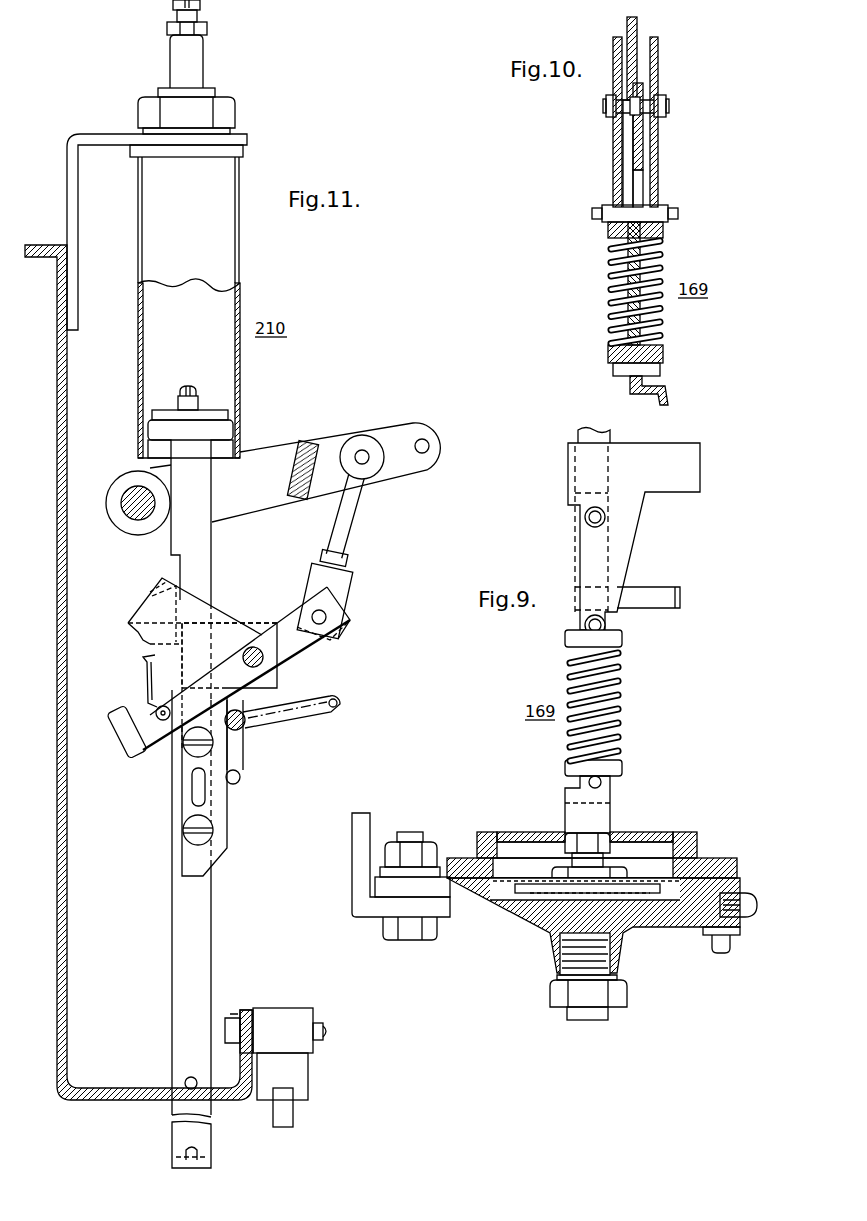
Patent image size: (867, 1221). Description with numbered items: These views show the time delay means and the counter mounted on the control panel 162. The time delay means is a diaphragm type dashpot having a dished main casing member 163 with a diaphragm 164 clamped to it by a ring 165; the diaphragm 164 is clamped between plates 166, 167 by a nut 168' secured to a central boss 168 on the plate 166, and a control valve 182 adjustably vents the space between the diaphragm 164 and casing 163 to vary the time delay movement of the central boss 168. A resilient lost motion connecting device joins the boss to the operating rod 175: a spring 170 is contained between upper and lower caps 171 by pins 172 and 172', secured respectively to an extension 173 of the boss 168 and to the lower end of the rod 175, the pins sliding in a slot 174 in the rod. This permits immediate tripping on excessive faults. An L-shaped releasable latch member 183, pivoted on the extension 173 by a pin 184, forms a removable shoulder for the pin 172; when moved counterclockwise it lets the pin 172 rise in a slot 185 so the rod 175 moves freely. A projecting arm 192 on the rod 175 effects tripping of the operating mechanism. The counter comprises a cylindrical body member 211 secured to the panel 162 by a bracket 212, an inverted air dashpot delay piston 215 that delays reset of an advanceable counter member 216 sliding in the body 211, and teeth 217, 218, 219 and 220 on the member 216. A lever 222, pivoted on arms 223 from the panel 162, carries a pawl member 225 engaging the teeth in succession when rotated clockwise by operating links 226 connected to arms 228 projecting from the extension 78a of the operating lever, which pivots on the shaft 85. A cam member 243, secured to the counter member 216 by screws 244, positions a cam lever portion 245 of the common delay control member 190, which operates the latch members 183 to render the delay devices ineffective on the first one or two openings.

In FIG. 11, the control panel 162 is at (62, 466).
In FIG. 11, the bracket 212 is at (67, 186).
In FIG. 11, the cylindrical body member 211 is at (239, 258).
In FIG. 11, the air dashpot delay piston 215 is at (146, 449).
In FIG. 11, the arms 228 is at (396, 428).
In FIG. 11, the lever extension 78a is at (303, 446).
In FIG. 11, the shaft 85 is at (124, 518).
In FIG. 11, the tooth 217 is at (175, 557).
In FIG. 11, the advanceable counter member 216 is at (212, 946).
In FIG. 11, the operating links 226 is at (348, 536).
In FIG. 11, the lever 222 is at (324, 638).
In FIG. 11, the cam member 243 is at (228, 831).
In FIG. 11, the screws 244 is at (190, 752).
In FIG. 11, the pawl member 225 is at (210, 614).
In FIG. 11, the tooth 218 is at (152, 603).
In FIG. 11, the tooth 219 is at (146, 650).
In FIG. 11, the tooth 220 is at (146, 683).
In FIG. 11, the arms 223 is at (279, 684).
In FIG. 11, the delay control member 190 is at (282, 717).
In FIG. 11, the cam lever portion 245 is at (240, 777).
In FIG. 10, the releasable latch member 183 is at (658, 160).
In FIG. 9, the releasable latch member 183 is at (632, 537).
In FIG. 10, the operating rod 175 is at (637, 25).
In FIG. 9, the operating rod 175 is at (578, 436).
In FIG. 10, the slot 185 is at (645, 190).
In FIG. 10, the pin 184 is at (669, 108).
In FIG. 9, the pin 184 is at (588, 520).
In FIG. 10, the pin 172 is at (613, 214).
In FIG. 9, the pin 172 is at (619, 625).
In FIG. 10, the caps 171 is at (664, 230).
In FIG. 9, the caps 171 is at (623, 640).
In FIG. 10, the slot 174 is at (626, 248).
In FIG. 10, the spring 170 is at (612, 299).
In FIG. 9, the spring 170 is at (568, 682).
In FIG. 10, the pin 172' is at (611, 371).
In FIG. 9, the pin 172' is at (621, 786).
In FIG. 10, the extension 173 is at (666, 392).
In FIG. 9, the extension 173 is at (610, 811).
In FIG. 9, the projecting arm 192 is at (681, 596).
In FIG. 9, the central boss 168 is at (566, 837).
In FIG. 9, the nut 168' is at (569, 867).
In FIG. 9, the ring 165 is at (668, 832).
In FIG. 9, the diaphragm 164 is at (696, 870).
In FIG. 9, the dished main casing member 163 is at (526, 926).
In FIG. 9, the plate 166 is at (638, 874).
In FIG. 9, the plate 167 is at (630, 924).
In FIG. 9, the control valve 182 is at (755, 918).